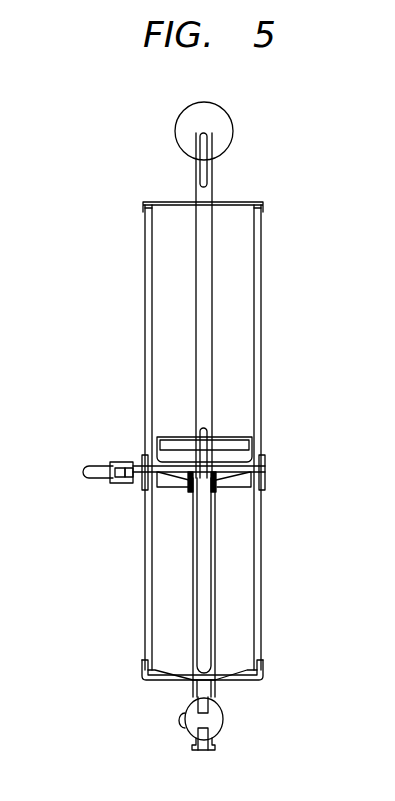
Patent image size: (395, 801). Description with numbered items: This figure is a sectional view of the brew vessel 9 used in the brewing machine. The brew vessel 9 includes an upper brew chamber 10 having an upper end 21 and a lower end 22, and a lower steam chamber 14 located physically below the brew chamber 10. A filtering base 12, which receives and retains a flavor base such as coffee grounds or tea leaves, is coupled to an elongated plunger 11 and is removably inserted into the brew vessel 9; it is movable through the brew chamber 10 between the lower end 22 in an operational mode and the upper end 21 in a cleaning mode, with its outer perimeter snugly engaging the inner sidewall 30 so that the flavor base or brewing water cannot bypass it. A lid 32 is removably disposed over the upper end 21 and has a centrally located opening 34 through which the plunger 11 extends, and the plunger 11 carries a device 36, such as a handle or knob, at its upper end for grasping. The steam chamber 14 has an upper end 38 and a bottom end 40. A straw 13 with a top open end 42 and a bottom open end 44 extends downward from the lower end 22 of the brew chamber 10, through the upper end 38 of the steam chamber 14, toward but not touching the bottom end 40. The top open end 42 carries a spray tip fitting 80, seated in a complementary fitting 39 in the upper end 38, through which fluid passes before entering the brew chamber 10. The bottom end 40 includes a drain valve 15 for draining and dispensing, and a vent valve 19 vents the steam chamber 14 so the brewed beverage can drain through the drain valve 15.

The brew vessel 9 is at (83, 138).
The brew chamber 10 is at (205, 437).
The elongated plunger 11 is at (226, 305).
The filtering base 12 is at (207, 434).
The straw 13 is at (204, 614).
The steam chamber 14 is at (240, 546).
The drain valve 15 is at (222, 722).
The vent valve 19 is at (82, 472).
The upper end 21 is at (150, 209).
The lower end 22 is at (158, 446).
The inner sidewall 30 is at (152, 275).
The lid 32 is at (207, 212).
The centrally located opening 34 is at (193, 198).
The device 36 is at (232, 122).
The upper end 38 is at (279, 526).
The complementary fitting 39 is at (264, 474).
The bottom end 40 is at (206, 657).
The top open end 42 is at (196, 494).
The bottom open end 44 is at (200, 664).
The spray tip fitting 80 is at (185, 488).